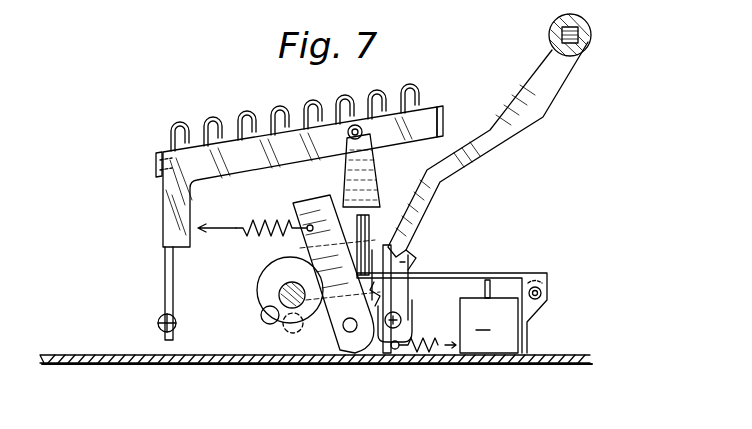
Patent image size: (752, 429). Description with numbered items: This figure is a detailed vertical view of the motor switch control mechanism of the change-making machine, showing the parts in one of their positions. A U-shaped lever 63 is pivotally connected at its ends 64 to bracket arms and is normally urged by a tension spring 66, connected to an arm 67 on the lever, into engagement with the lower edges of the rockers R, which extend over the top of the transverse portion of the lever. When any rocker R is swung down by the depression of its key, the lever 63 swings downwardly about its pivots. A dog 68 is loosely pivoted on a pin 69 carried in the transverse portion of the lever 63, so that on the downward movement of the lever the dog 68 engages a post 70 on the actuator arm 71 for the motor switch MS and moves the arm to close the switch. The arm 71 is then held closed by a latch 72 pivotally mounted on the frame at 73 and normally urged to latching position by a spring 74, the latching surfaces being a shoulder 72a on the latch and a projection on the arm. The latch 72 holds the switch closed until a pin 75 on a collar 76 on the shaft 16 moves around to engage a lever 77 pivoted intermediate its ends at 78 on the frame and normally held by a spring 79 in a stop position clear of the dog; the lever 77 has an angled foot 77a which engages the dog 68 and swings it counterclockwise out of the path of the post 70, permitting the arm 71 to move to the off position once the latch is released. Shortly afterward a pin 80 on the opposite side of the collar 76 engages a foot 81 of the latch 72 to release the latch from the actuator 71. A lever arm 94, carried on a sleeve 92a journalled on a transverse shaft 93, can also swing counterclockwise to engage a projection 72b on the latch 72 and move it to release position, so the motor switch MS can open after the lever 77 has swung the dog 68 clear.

The U-shaped lever 63 is at (275, 165).
The ends of lever 64 is at (443, 118).
The rocker R is at (345, 106).
The pin 69 is at (348, 132).
The dog 68 is at (375, 182).
The post 70 is at (372, 232).
The sleeve 92a is at (612, 12).
The transverse shaft 93 is at (562, 35).
The lever arm 94 is at (475, 150).
The projection 72b is at (416, 258).
The latch 72 is at (392, 268).
The shoulder 72a is at (393, 296).
The actuator arm 71 is at (455, 280).
The motor switch MS is at (489, 316).
The latch pivot 73 is at (402, 318).
The spring 74 is at (430, 352).
The angled foot 77a is at (318, 200).
The lever pivot 78 is at (342, 334).
The lever 77 is at (292, 216).
The spring 79 is at (235, 224).
The collar 76 is at (262, 262).
The pin 75 is at (246, 323).
The shaft 16 is at (279, 300).
The foot 81 is at (290, 284).
The pin 80 is at (292, 333).
The arm 67 is at (173, 278).
The tension spring 66 is at (158, 323).